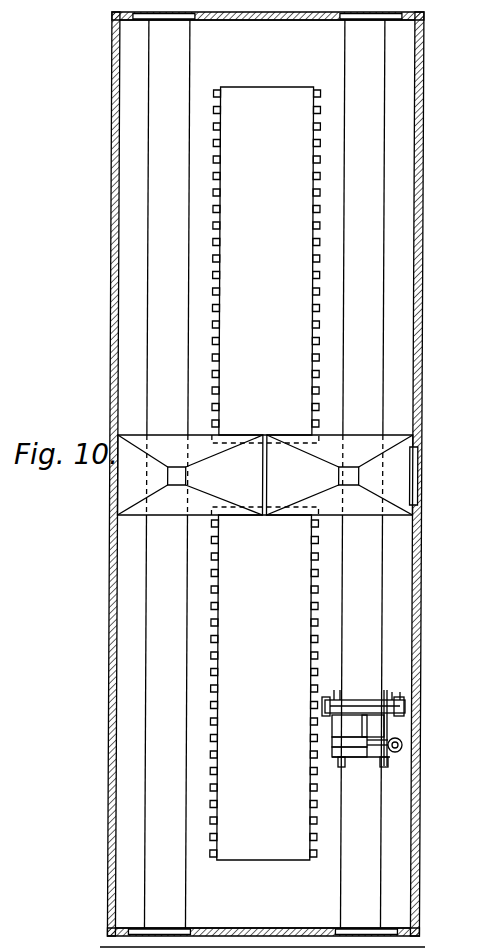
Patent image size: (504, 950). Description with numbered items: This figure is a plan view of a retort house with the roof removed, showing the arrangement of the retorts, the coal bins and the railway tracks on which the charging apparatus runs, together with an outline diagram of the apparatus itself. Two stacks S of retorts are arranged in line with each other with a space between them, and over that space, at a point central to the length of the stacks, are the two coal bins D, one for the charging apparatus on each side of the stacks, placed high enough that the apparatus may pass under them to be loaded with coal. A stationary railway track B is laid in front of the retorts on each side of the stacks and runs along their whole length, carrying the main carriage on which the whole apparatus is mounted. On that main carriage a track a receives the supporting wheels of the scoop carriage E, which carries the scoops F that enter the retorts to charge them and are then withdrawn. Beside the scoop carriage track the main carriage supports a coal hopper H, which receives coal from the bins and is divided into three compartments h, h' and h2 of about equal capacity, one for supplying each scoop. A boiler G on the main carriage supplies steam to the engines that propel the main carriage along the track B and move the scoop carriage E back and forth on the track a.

The stack S is at (265, 473).
The coal bin D is at (264, 475).
The railway track B is at (264, 474).
The track a is at (369, 707).
The scoop carriage E is at (394, 721).
The scoop F is at (363, 706).
The hopper compartment h is at (349, 726).
The coal hopper H is at (373, 726).
The hopper compartment h' is at (349, 742).
The hopper compartment h2 is at (361, 756).
The boiler G is at (386, 756).